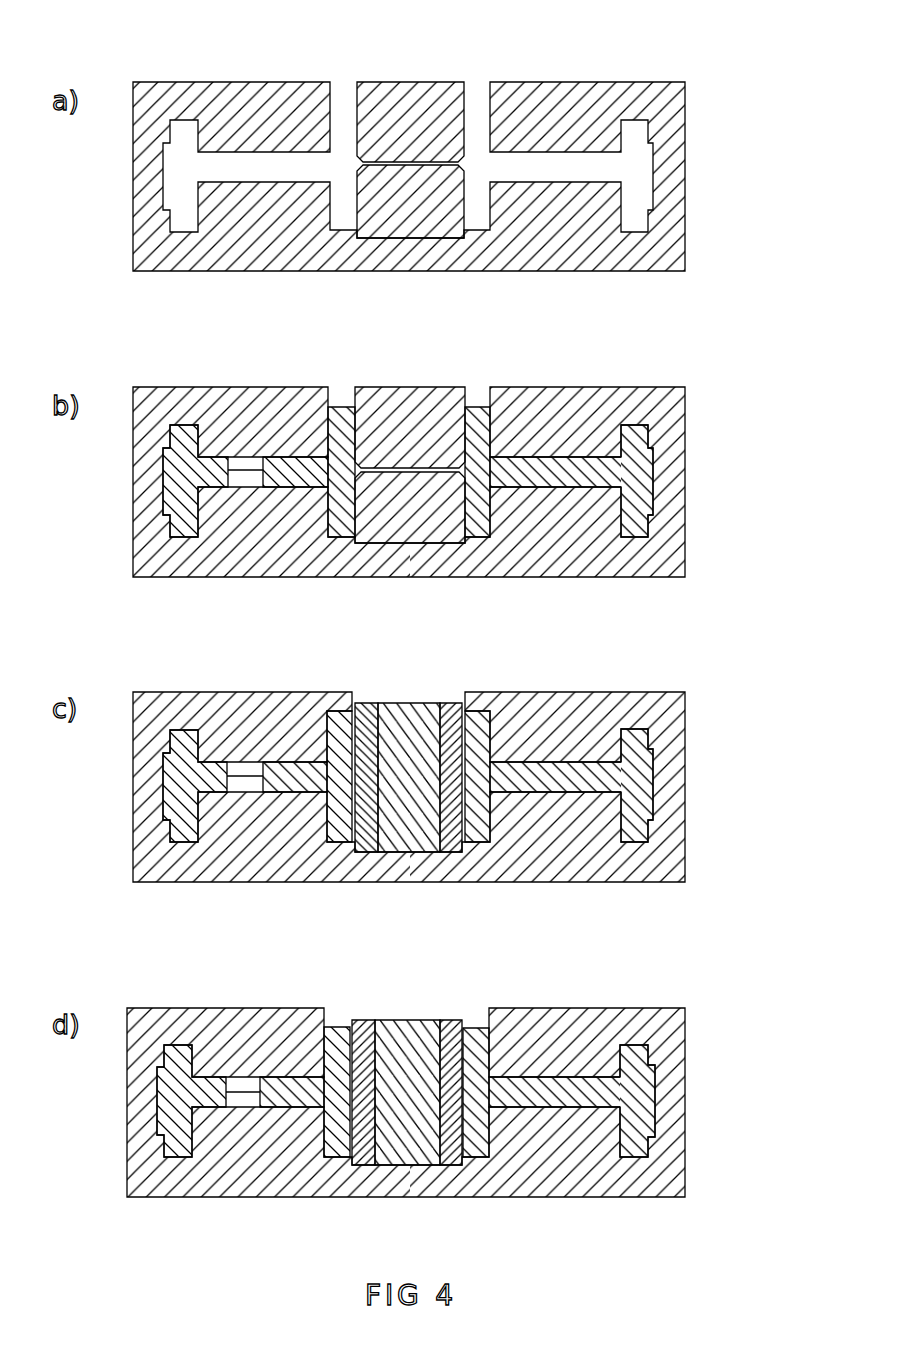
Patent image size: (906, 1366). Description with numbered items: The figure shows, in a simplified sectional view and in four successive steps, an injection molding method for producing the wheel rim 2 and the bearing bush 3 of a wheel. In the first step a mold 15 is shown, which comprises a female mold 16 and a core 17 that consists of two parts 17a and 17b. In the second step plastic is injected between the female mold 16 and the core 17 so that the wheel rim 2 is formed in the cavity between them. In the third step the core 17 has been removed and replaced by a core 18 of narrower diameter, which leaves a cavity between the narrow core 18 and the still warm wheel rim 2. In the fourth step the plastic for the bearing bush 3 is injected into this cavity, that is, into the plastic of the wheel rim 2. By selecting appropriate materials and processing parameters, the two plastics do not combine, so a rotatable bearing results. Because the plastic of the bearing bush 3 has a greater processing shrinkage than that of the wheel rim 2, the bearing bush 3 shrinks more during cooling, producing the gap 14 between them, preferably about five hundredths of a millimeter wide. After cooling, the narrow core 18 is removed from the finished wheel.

The mold 15 is at (716, 146).
The female mold 16 is at (244, 226).
The core 17 is at (446, 122).
The core part 17a is at (428, 240).
The core part 17b is at (392, 123).
The wheel rim 2 is at (338, 523).
The core of narrower diameter 18 is at (428, 832).
The gap 14 is at (352, 1032).
The bearing bush 3 is at (455, 1022).